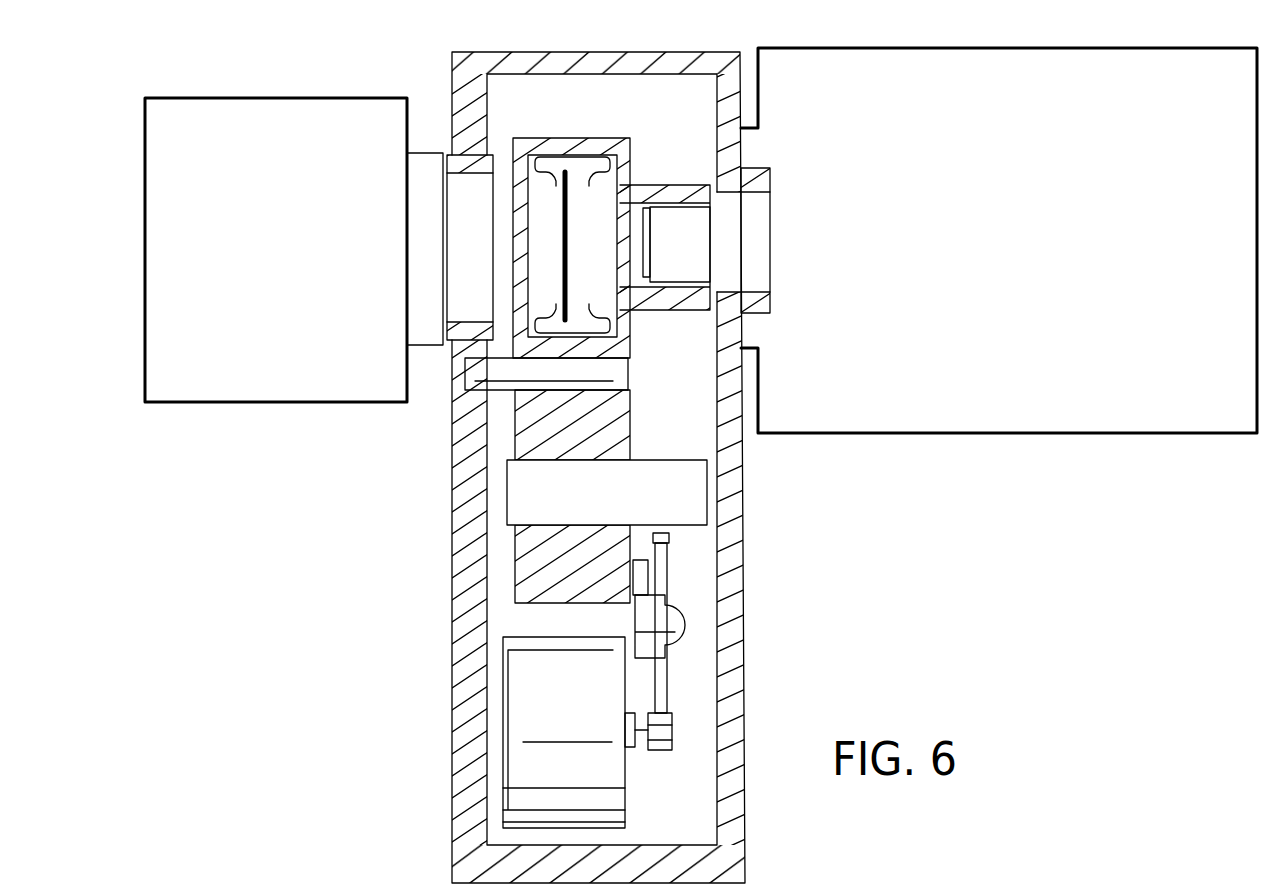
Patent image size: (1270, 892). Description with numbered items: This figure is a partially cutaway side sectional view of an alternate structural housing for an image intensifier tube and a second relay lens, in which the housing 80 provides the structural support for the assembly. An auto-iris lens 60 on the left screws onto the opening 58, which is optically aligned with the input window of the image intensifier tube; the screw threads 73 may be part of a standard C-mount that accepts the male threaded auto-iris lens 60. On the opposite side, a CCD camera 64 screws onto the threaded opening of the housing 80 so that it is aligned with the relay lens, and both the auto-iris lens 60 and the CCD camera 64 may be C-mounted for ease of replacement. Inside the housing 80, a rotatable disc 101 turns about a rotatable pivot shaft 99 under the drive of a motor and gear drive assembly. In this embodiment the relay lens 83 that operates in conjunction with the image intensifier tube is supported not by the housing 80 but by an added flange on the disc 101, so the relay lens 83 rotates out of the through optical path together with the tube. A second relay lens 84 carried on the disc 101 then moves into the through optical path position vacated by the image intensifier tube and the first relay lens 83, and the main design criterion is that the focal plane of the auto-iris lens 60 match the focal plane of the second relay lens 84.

The opening 58 is at (443, 272).
The auto-iris lens 60 is at (288, 97).
The CCD camera 64 is at (946, 32).
The screw threads 73 is at (458, 175).
The housing 80 is at (460, 750).
The relay lens 83 is at (643, 216).
The second relay lens 84 is at (507, 512).
The rotatable pivot shaft 99 is at (498, 393).
The rotatable disc 101 is at (583, 136).